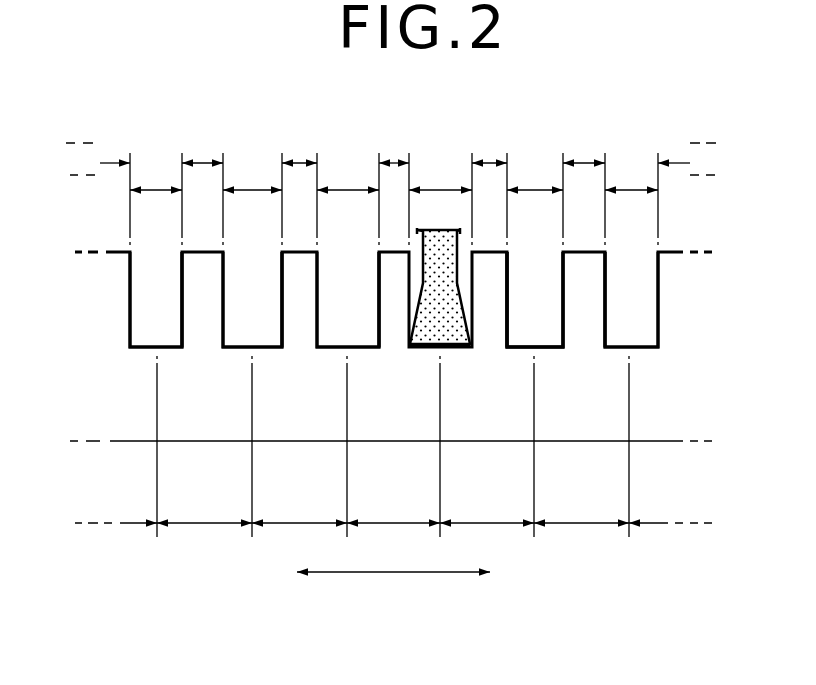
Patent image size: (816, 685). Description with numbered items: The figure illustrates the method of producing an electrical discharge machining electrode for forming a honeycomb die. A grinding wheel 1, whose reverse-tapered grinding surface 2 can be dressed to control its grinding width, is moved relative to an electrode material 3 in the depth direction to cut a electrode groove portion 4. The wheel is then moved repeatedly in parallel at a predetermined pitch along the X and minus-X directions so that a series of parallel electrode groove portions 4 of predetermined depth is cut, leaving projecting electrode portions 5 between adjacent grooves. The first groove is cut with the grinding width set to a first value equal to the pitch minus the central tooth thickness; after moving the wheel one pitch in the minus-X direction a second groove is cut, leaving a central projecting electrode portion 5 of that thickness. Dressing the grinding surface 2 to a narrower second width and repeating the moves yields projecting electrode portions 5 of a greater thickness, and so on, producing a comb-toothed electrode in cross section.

The grinding wheel 1 is at (410, 327).
The grinding surface 2 is at (420, 350).
The electrode material 3 is at (76, 295).
The electrode groove portion 4 is at (391, 339).
The projecting electrode portion 5 is at (391, 281).